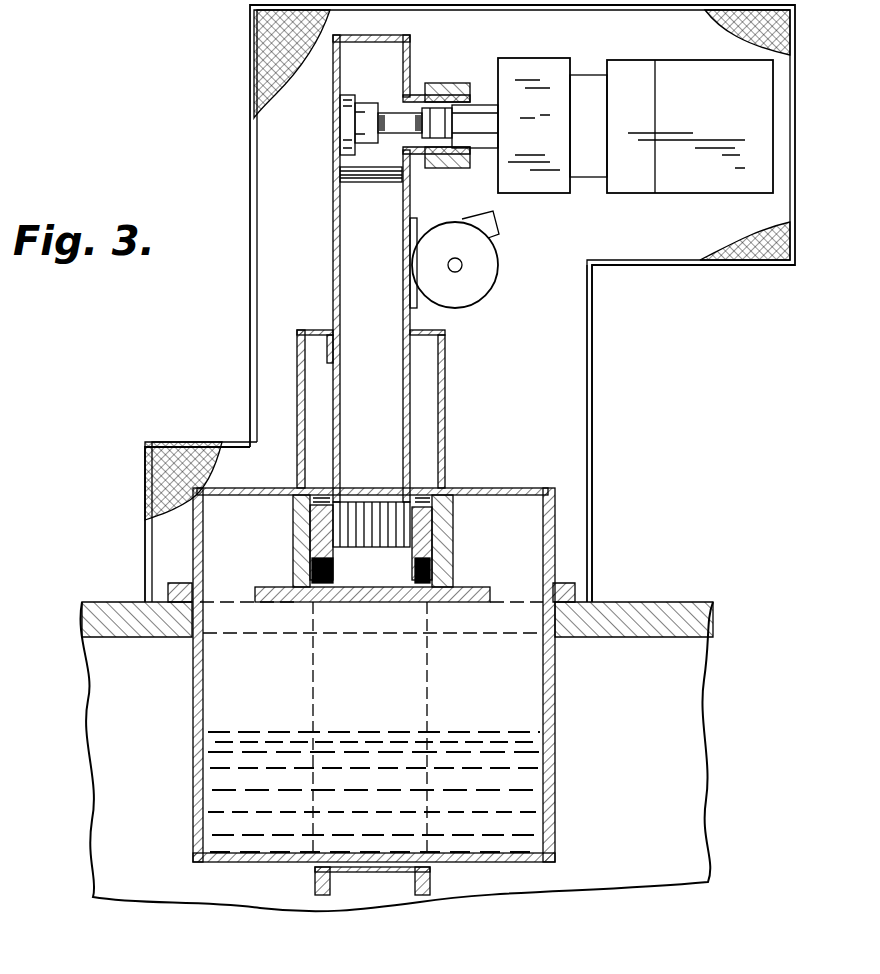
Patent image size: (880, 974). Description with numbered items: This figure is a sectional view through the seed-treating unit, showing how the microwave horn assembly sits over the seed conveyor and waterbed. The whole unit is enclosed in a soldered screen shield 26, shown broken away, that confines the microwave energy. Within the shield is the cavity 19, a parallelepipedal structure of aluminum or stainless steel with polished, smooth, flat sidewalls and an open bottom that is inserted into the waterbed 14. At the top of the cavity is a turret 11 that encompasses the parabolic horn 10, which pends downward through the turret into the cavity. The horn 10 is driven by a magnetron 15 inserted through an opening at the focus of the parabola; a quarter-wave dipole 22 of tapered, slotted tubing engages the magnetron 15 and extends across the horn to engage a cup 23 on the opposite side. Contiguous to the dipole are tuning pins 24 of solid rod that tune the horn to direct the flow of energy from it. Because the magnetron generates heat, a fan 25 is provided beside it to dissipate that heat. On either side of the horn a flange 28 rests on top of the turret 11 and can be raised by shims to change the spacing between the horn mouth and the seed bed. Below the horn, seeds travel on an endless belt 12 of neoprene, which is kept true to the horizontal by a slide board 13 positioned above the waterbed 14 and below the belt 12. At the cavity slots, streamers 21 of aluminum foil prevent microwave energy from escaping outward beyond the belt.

The horn 10 is at (333, 272).
The turret 11 is at (445, 395).
The endless belt 12 is at (432, 872).
The slide board 13 is at (483, 586).
The waterbed 14 is at (478, 730).
The magnetron 15 is at (538, 68).
The cavity 19 is at (540, 410).
The streamers 21 is at (355, 552).
The quarter-wave dipole 22 is at (393, 118).
The cup 23 is at (347, 95).
The tuning pins 24 is at (372, 182).
The fan 25 is at (487, 252).
The shield 26 is at (250, 45).
The flange 28 is at (445, 331).